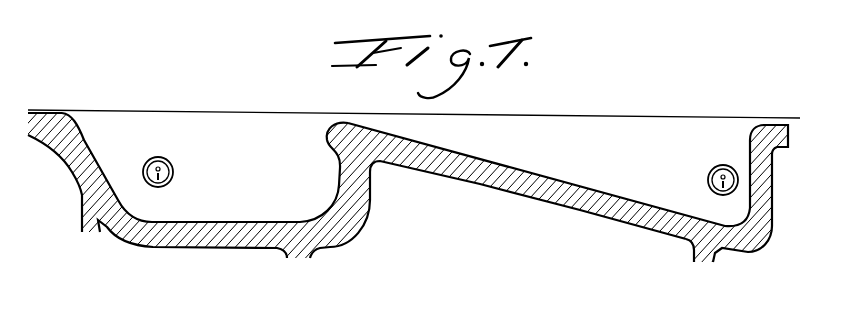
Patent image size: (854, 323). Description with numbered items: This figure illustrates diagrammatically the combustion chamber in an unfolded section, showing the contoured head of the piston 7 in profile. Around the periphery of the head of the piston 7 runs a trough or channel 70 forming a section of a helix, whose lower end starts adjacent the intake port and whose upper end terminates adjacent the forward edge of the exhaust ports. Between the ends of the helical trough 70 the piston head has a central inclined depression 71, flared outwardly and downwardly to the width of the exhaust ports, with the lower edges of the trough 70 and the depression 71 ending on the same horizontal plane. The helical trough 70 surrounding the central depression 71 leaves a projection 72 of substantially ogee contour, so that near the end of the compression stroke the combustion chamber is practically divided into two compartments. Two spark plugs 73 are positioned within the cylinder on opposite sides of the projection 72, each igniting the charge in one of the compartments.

The piston 7 is at (215, 247).
The peripheral trough 70 is at (604, 191).
The central inclined depression 71 is at (204, 118).
The projection 72 is at (59, 111).
The spark plugs 73 is at (169, 162).